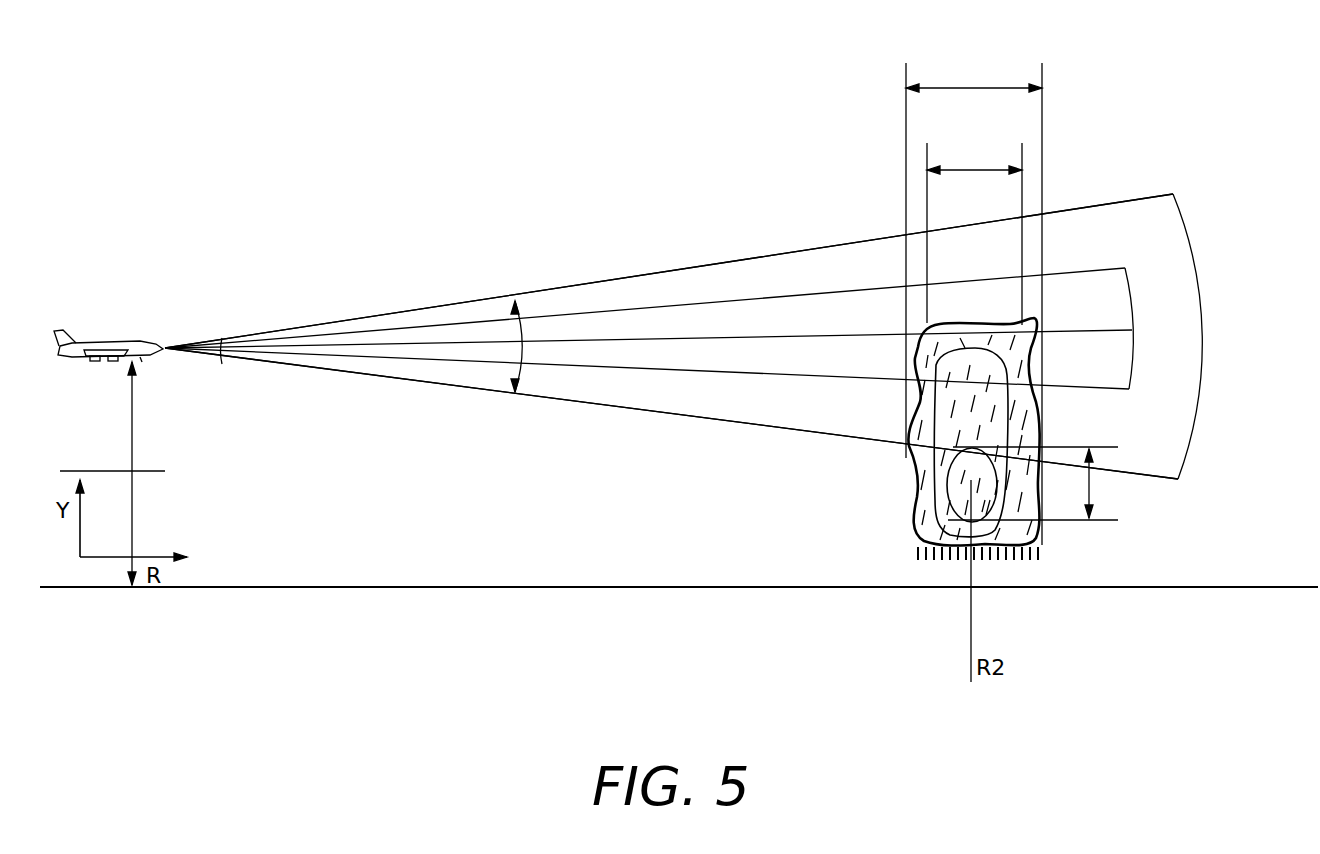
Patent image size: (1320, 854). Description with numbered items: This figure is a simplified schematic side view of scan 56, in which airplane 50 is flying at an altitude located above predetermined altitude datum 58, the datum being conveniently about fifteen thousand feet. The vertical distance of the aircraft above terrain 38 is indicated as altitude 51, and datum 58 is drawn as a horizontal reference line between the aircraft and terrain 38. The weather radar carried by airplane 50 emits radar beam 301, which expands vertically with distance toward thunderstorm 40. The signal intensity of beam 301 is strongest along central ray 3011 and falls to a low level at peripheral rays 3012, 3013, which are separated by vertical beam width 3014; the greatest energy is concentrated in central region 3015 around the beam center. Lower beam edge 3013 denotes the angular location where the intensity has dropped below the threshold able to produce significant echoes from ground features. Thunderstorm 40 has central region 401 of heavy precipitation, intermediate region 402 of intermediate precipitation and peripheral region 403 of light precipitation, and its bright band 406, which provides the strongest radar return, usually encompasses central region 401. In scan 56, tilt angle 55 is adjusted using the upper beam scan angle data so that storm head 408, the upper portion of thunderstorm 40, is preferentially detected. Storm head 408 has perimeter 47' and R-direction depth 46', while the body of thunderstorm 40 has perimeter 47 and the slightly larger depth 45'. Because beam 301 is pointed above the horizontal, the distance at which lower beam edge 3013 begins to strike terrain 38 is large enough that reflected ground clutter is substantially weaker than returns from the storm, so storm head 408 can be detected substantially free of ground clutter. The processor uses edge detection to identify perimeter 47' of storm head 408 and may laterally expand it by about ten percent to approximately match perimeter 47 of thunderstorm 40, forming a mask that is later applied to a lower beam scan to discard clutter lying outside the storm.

The terrain 38 is at (722, 590).
The airplane 50 is at (104, 343).
The altitude 51 is at (134, 508).
The tilt angle 55 is at (222, 338).
The scan 56 is at (1288, 116).
The predetermined altitude datum 58 is at (75, 470).
The radar beam 301 is at (560, 262).
The central ray 3011 is at (818, 335).
The peripheral ray 3012 is at (840, 245).
The lower beam edge 3013 is at (745, 428).
The vertical beam width 3014 is at (521, 327).
The central region of the beam 3015 is at (1143, 262).
The thunderstorm 40 is at (900, 405).
The central region 401 is at (950, 512).
The intermediate region 402 is at (912, 469).
The peripheral region 403 is at (975, 330).
The bright band 406 is at (1092, 490).
The storm head 408 is at (1060, 424).
The depth 45' is at (974, 290).
The depth 46' is at (974, 221).
The perimeter 47 is at (1005, 548).
The perimeter 47' is at (884, 353).